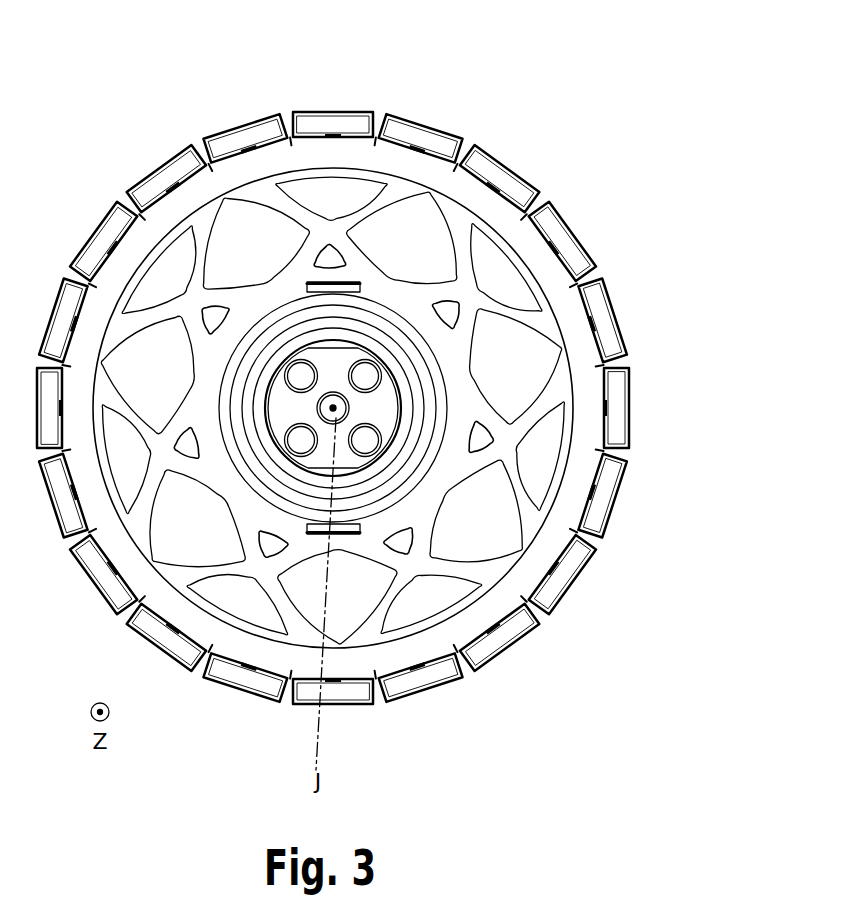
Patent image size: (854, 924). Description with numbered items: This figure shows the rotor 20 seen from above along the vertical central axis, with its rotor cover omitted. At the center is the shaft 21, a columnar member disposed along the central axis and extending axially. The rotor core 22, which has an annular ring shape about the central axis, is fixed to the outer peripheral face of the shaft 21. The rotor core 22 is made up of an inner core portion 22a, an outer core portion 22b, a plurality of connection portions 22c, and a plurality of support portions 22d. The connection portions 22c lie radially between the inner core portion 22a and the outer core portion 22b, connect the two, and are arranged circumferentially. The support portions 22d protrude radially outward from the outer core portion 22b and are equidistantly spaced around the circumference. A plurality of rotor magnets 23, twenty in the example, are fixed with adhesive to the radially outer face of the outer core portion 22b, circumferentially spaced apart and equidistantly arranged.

The rotor 20 is at (372, 358).
The shaft 21 is at (384, 412).
The rotor core 22 is at (385, 363).
The inner core portion 22a is at (437, 325).
The outer core portion 22b is at (397, 160).
The connection portions 22c is at (542, 402).
The support portions 22d is at (205, 157).
The rotor magnet 23 is at (162, 177).